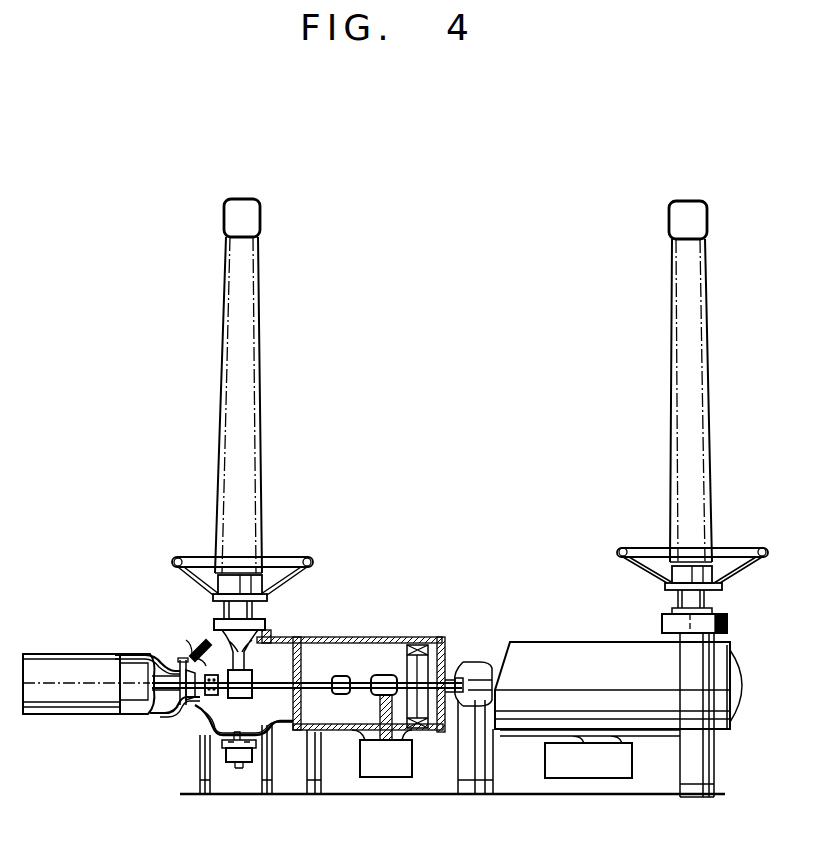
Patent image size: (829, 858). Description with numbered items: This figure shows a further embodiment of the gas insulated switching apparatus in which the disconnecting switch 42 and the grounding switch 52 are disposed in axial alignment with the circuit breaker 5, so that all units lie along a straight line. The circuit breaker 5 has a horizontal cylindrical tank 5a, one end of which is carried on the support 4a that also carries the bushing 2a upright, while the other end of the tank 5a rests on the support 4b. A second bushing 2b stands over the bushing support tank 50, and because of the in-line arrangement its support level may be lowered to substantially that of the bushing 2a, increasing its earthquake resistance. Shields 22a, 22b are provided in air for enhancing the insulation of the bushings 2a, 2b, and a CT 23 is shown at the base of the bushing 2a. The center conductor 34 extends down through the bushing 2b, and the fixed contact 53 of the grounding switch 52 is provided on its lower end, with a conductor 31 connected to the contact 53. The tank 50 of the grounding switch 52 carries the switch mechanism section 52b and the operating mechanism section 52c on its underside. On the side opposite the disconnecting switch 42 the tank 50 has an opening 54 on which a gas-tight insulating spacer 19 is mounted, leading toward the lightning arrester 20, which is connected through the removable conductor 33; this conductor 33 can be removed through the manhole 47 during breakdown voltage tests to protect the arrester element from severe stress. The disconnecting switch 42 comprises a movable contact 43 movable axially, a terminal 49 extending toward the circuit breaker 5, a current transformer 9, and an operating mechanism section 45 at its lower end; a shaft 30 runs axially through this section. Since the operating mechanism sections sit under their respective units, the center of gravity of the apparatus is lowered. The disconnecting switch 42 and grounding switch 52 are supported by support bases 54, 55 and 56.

The bushing 2a is at (712, 423).
The bushing 2b is at (260, 414).
The shield 22a is at (763, 548).
The shield 22b is at (309, 560).
The CT 23 is at (730, 622).
The center conductor 34 is at (213, 622).
The manhole 47 is at (192, 641).
The insulating spacer 19 is at (160, 654).
The bushing support tank 50 is at (268, 638).
The conductor 31 is at (290, 634).
The disconnecting switch 42 is at (403, 630).
The current transformer 9 is at (432, 640).
The cylindrical tank 5a is at (590, 642).
The circuit breaker 5 is at (593, 685).
The lightning arrester 20 is at (102, 716).
The opening 54 is at (188, 706).
The removable conductor 33 is at (209, 696).
The fixed contact 53 is at (242, 674).
The shaft 30 is at (300, 644).
The terminal 49 is at (342, 677).
The movable contact 43 is at (390, 676).
The support base 56 is at (226, 757).
The operating mechanism section 52c is at (226, 756).
The grounding switch 52 is at (274, 752).
The switch mechanism section 52b is at (239, 768).
The support base 55 is at (274, 790).
The operating mechanism section 45 is at (407, 778).
The support 4b is at (485, 760).
The support 4a is at (704, 760).